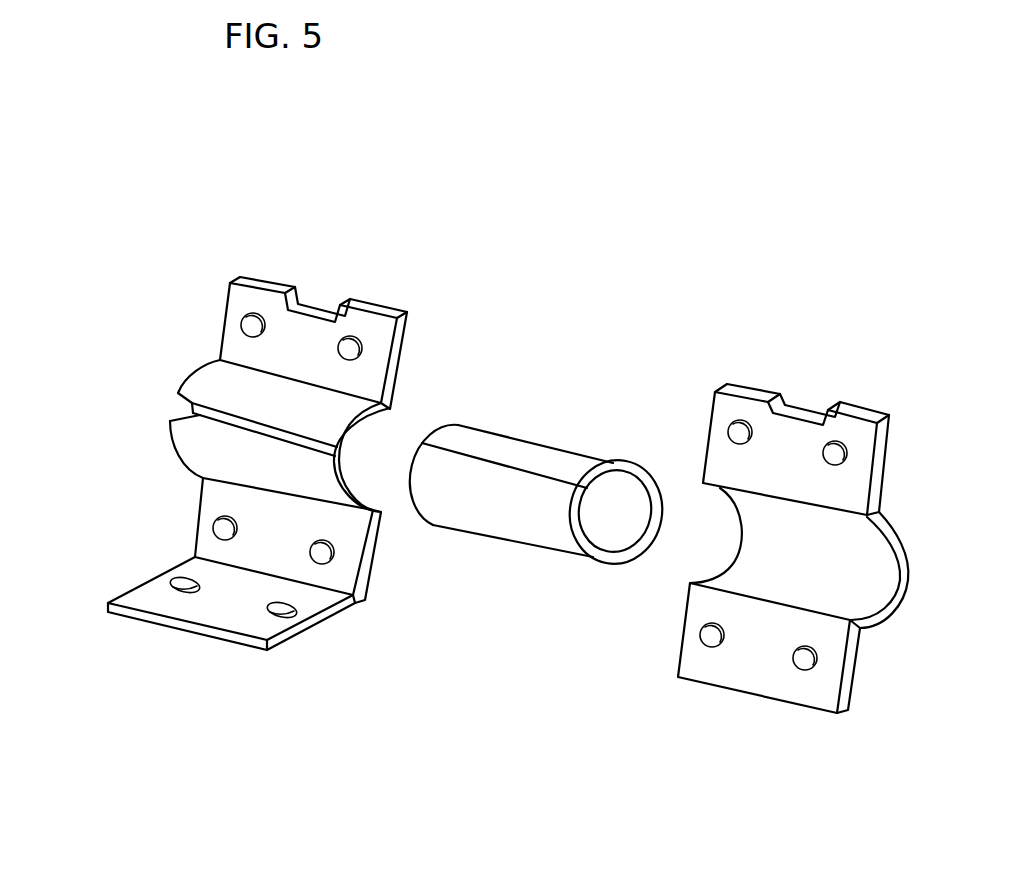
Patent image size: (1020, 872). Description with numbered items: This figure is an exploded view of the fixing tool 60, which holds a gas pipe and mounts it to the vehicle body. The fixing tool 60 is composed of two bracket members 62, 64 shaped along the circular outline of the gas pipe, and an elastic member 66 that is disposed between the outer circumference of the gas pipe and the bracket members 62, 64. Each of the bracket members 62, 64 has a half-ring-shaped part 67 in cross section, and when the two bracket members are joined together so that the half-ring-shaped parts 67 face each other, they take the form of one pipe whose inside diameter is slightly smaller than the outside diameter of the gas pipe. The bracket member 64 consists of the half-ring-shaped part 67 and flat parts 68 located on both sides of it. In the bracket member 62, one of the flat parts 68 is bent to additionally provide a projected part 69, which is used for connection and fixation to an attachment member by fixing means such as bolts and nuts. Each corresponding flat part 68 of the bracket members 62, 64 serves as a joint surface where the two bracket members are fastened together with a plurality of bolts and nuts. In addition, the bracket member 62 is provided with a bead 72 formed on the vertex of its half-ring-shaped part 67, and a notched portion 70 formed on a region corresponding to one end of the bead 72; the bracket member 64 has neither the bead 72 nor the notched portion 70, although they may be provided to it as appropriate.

The fixing tool 60 is at (743, 268).
The bracket member 62 is at (268, 281).
The bracket member 64 is at (760, 390).
The elastic member 66 is at (537, 533).
The half-ring-shaped part 67 is at (367, 478).
The flat part 68 is at (392, 369).
The projected part 69 is at (310, 628).
The notched portion 70 is at (177, 410).
The bead 72 is at (222, 422).